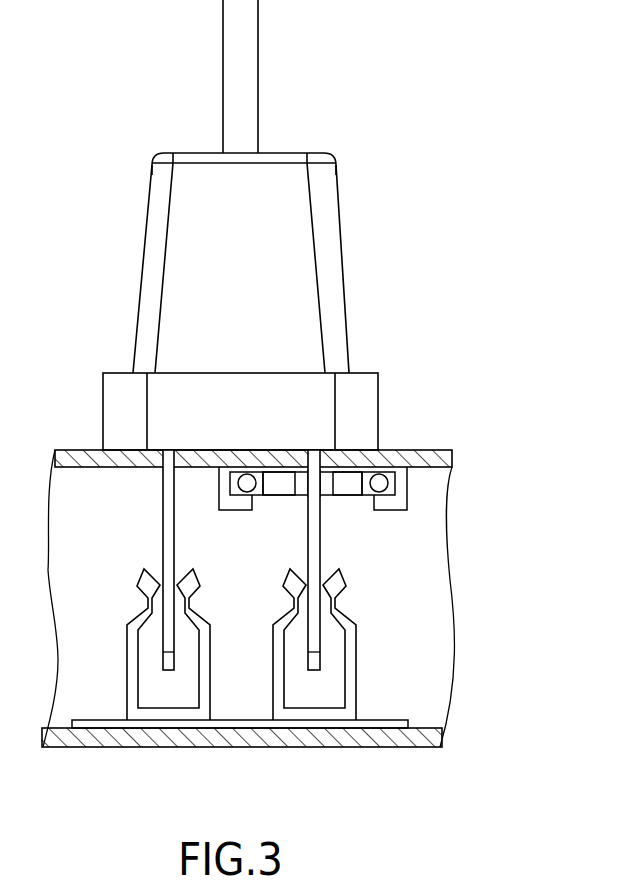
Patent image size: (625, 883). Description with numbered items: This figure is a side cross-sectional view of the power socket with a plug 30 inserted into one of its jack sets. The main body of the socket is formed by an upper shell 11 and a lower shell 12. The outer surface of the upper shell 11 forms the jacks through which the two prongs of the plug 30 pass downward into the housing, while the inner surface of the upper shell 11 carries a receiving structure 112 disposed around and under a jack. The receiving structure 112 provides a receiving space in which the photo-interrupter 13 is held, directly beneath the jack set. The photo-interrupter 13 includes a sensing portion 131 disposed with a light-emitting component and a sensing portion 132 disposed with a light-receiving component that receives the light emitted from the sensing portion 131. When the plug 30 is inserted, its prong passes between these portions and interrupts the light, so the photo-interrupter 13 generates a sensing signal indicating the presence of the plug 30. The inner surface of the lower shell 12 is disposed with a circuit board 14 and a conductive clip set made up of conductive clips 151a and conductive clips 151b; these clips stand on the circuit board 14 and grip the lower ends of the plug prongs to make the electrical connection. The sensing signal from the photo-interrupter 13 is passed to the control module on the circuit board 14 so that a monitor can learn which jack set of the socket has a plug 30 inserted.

The plug 30 is at (380, 411).
The upper shell 11 is at (445, 457).
The receiving structure 112 is at (225, 477).
The photo-interrupter 13 is at (326, 514).
The sensing portion 131 is at (278, 483).
The sensing portion 132 is at (347, 487).
The conductive clips 151a is at (171, 713).
The conductive clips 151b is at (355, 682).
The circuit board 14 is at (388, 723).
The lower shell 12 is at (417, 735).